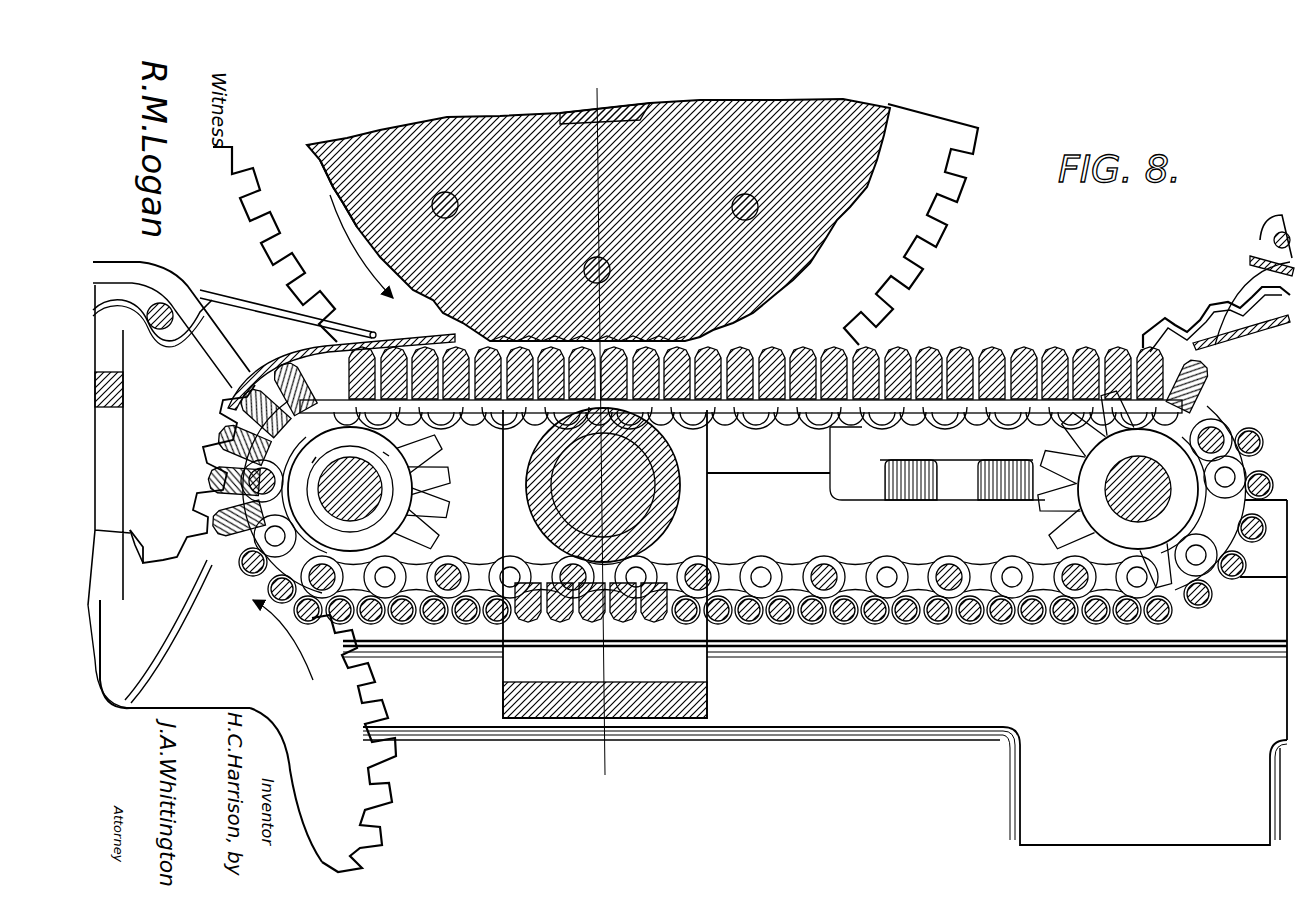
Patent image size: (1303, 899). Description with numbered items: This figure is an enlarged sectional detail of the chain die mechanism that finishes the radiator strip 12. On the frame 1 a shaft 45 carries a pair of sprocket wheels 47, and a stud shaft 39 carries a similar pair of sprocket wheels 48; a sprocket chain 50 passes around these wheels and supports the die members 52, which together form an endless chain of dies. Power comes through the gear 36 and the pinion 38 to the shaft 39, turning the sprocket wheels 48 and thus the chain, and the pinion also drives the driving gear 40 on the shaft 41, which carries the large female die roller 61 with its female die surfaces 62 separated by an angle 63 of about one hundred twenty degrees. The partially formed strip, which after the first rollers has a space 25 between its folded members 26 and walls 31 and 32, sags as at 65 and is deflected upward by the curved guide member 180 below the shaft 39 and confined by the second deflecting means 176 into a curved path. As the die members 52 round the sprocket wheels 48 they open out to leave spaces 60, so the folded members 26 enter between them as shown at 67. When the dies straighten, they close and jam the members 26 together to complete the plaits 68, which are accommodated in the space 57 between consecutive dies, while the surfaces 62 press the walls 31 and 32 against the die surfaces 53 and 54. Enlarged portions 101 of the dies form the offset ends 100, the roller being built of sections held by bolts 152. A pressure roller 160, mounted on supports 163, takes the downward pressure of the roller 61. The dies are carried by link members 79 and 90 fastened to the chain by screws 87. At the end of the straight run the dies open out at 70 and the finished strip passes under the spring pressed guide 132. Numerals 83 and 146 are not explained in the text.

The frame 1 is at (795, 742).
The strip 12 is at (597, 86).
The space 25 is at (192, 474).
The folded members 26 is at (159, 531).
The wall 31 is at (775, 360).
The wall 32 is at (808, 355).
The gear 36 is at (195, 635).
The pinion 38 is at (455, 520).
The stud shaft 39 is at (352, 521).
The driving gear 40 is at (945, 205).
The shaft 41 is at (620, 108).
The shaft 45 is at (1110, 490).
The sprocket wheels 47 is at (1080, 425).
The sprocket wheels 48 is at (425, 505).
The sprocket chain 50 is at (462, 570).
The die members 52 is at (350, 466).
The die surface 53 is at (834, 355).
The die surface 54 is at (816, 355).
The space 57 is at (750, 418).
The spaces 60 is at (238, 520).
The female die roller 61 is at (412, 142).
The female die surfaces 62 is at (336, 190).
The angle 63 is at (342, 205).
The sag 65 is at (125, 490).
The entry point 67 is at (245, 372).
The plaits 68 is at (1095, 352).
The exit point 70 is at (1185, 312).
The link members 79 is at (780, 625).
The rollers 83 is at (968, 625).
The screws 87 is at (310, 578).
The link members 90 is at (812, 625).
The offset ends 100 is at (1080, 355).
The enlarged portions 101 is at (1210, 378).
The spring pressed guide 132 is at (1266, 240).
The pivot rod 146 is at (1256, 332).
The bolts 152 is at (760, 205).
The pressure roller 160 is at (680, 505).
The supports 163 is at (712, 490).
The second deflecting means 176 is at (290, 345).
The curved guide member 180 is at (175, 672).